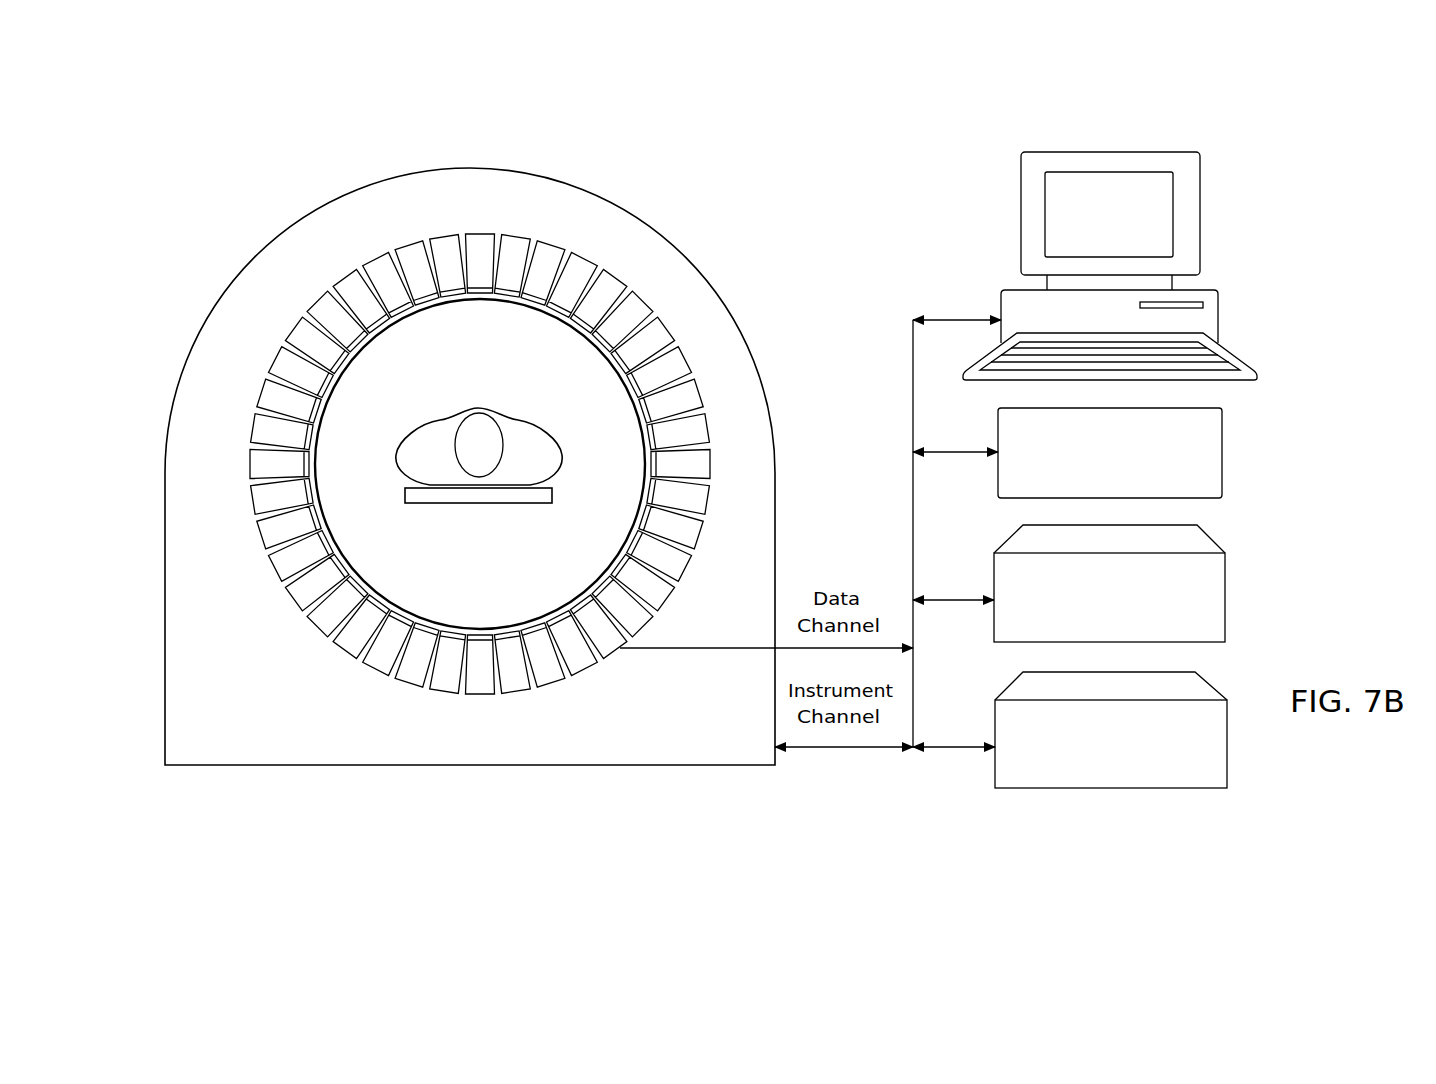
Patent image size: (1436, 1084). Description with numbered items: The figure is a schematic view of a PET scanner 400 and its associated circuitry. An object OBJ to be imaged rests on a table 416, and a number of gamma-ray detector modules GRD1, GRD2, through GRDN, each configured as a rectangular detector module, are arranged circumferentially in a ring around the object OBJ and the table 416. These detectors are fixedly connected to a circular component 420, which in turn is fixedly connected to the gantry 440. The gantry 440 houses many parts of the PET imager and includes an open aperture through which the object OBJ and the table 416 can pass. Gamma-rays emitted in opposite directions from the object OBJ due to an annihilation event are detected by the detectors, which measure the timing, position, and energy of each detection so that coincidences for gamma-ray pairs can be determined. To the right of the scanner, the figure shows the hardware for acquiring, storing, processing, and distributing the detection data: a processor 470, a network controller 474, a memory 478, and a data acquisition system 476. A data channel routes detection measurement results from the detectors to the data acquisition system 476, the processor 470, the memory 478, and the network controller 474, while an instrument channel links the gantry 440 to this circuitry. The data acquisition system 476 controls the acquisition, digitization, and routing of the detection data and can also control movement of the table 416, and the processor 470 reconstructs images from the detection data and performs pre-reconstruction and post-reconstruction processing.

The PET scanner 400 is at (832, 102).
The gantry 440 is at (700, 272).
The circular component 420 is at (467, 407).
The gamma-ray detector GRD1 is at (483, 233).
The gamma-ray detector GRD2 is at (515, 238).
The gamma-ray detector GRDN is at (440, 239).
The object OBJ is at (455, 413).
The table 416 is at (452, 503).
The processor 470 is at (1110, 266).
The network controller 474 is at (1110, 453).
The memory 478 is at (1109, 583).
The data acquisition system 476 is at (1111, 730).